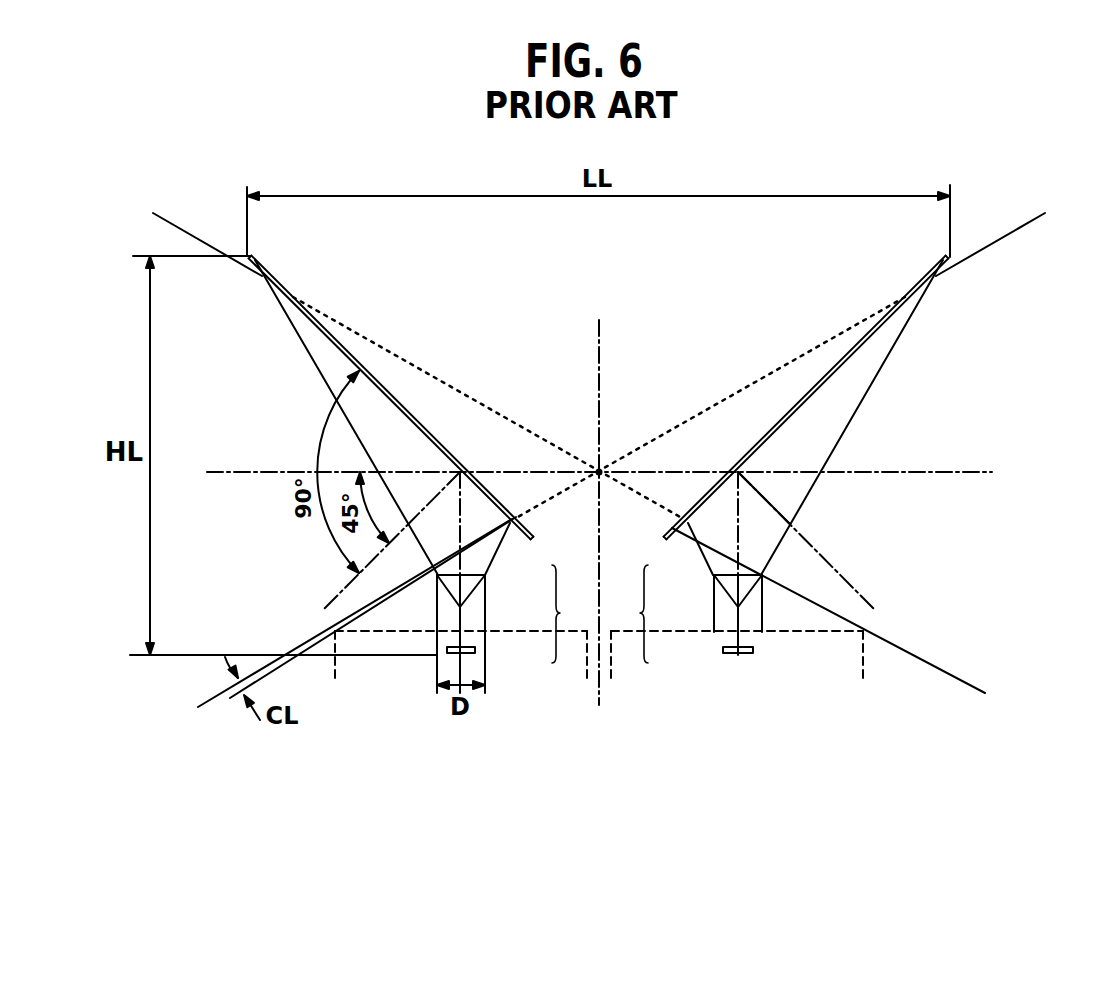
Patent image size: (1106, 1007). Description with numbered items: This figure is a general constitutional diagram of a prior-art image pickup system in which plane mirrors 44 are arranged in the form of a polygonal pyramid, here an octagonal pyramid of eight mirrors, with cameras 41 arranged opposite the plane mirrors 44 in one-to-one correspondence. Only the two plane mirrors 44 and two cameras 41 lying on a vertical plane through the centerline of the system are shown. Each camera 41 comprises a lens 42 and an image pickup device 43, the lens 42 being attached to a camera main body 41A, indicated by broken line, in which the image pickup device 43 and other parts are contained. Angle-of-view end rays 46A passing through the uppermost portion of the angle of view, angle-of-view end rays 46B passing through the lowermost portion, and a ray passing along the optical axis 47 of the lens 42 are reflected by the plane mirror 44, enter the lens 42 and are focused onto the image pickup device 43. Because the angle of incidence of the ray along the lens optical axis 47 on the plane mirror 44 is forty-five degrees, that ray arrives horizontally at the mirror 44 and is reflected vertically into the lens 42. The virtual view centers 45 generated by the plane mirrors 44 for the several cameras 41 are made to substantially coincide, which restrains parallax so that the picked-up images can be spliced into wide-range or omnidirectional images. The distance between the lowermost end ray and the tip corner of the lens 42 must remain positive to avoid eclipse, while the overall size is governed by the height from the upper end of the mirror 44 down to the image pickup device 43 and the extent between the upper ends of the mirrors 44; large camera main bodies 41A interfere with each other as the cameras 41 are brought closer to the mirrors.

The camera 41 is at (600, 614).
The camera main body 41A is at (336, 660).
The lens 42 is at (487, 590).
The image pickup device 43 is at (477, 650).
The plane mirror 44 is at (322, 325).
The virtual view center 45 is at (600, 470).
The angle-of-view end ray 46A is at (186, 232).
The angle-of-view end ray 46B is at (306, 640).
The lens optical axis 47 is at (740, 518).